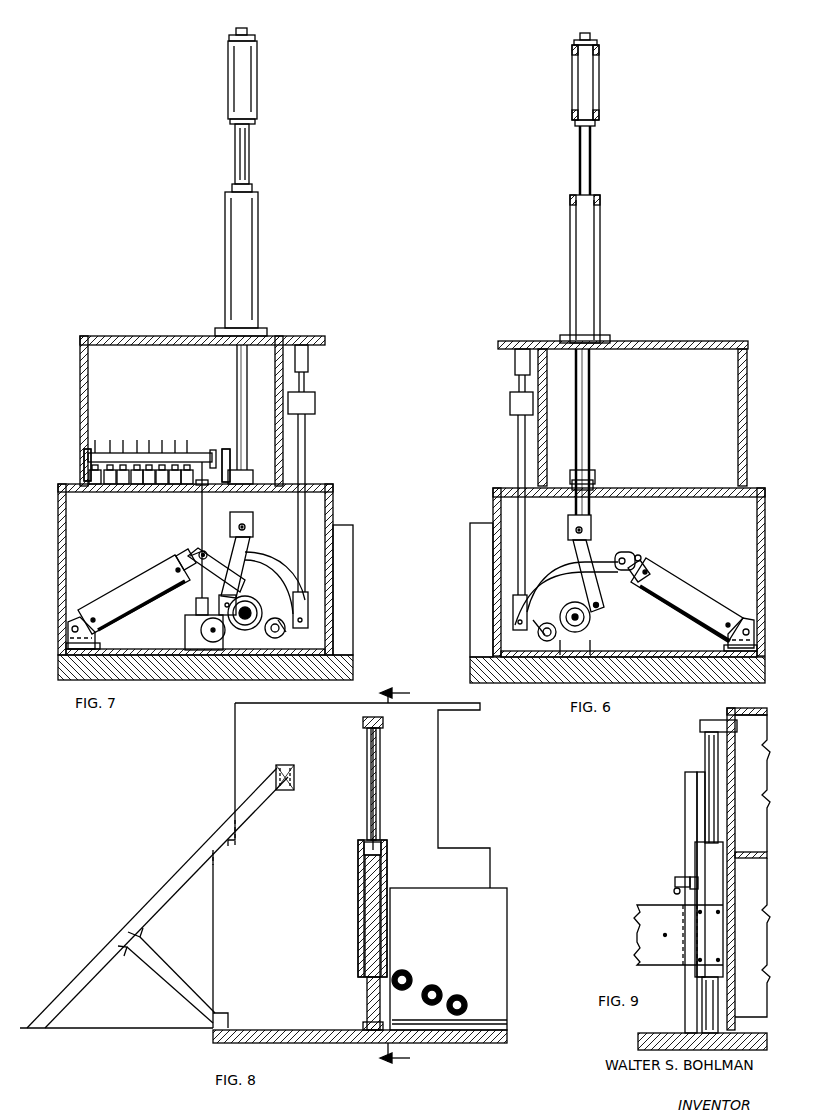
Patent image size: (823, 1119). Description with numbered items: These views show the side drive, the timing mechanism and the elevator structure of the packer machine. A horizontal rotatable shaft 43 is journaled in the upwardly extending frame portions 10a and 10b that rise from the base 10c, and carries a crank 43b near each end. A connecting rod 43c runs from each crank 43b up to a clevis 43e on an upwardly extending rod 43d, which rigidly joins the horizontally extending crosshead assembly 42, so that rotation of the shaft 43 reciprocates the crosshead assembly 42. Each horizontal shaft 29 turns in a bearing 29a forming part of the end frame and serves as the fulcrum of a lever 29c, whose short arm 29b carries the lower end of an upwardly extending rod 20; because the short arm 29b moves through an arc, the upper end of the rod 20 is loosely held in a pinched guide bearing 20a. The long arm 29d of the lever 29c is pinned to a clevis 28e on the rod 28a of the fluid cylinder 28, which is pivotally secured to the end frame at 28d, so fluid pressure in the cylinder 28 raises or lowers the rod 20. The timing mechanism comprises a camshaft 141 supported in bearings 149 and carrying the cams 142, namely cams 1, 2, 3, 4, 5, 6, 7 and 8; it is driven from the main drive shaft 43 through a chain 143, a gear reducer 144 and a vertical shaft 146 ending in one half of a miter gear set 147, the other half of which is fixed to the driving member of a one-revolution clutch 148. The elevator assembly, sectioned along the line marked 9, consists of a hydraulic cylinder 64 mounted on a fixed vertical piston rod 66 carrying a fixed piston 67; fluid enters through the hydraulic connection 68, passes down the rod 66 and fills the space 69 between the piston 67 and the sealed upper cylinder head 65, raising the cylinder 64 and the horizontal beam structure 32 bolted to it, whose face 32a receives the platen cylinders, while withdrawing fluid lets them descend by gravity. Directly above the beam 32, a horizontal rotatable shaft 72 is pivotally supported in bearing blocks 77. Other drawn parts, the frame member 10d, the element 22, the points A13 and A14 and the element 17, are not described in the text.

In FIG. 7, the crosshead assembly 42 is at (258, 75).
In FIG. 6, the crosshead assembly 42 is at (572, 75).
In FIG. 6, the frame portion 10a is at (500, 343).
In FIG. 8, the frame portion 10a is at (235, 760).
In FIG. 9, the frame portion 10a is at (757, 855).
In FIG. 7, the frame portion 10b is at (310, 336).
In FIG. 7, the base 10c is at (353, 660).
In FIG. 6, the base 10c is at (476, 676).
In FIG. 9, the base 10c is at (760, 1038).
In FIG. 8, the frame brace 10d is at (170, 886).
In FIG. 9, the frame brace 10d is at (685, 802).
In FIG. 7, the upwardly extending rod 43d is at (237, 352).
In FIG. 6, the upwardly extending rod 43d is at (591, 402).
In FIG. 6, the clevis 43e is at (590, 515).
In FIG. 7, the connecting rod 43c is at (250, 528).
In FIG. 6, the connecting rod 43c is at (592, 534).
In FIG. 7, the crank 43b is at (238, 600).
In FIG. 6, the crank 43b is at (600, 622).
In FIG. 7, the rotatable shaft 43 is at (247, 632).
In FIG. 6, the rotatable shaft 43 is at (580, 627).
In FIG. 8, the rotatable shaft 43 is at (409, 973).
In FIG. 7, the pinched guide bearing 20a is at (310, 362).
In FIG. 6, the pinched guide bearing 20a is at (515, 362).
In FIG. 7, the rod coupling 22 is at (316, 403).
In FIG. 6, the rod coupling 22 is at (510, 404).
In FIG. 7, the upwardly extending rod 20 is at (306, 450).
In FIG. 6, the upwardly extending rod 20 is at (518, 452).
In FIG. 7, the short arm 29b is at (298, 598).
In FIG. 6, the short arm 29b is at (535, 605).
In FIG. 7, the lever 29c is at (246, 575).
In FIG. 6, the lever 29c is at (575, 582).
In FIG. 7, the long arm 29d is at (216, 560).
In FIG. 6, the long arm 29d is at (608, 556).
In FIG. 7, the bearing 29a is at (284, 636).
In FIG. 6, the bearing 29a is at (540, 640).
In FIG. 7, the horizontal shaft 29 is at (277, 638).
In FIG. 6, the horizontal shaft 29 is at (546, 622).
In FIG. 8, the horizontal shaft 29 is at (440, 989).
In FIG. 7, the fluid cylinder 28 is at (138, 580).
In FIG. 6, the fluid cylinder 28 is at (690, 586).
In FIG. 7, the rod 28a is at (186, 556).
In FIG. 6, the rod 28a is at (648, 568).
In FIG. 7, the pivot 28d is at (78, 617).
In FIG. 6, the pivot 28d is at (745, 618).
In FIG. 7, the clevis 28e is at (200, 552).
In FIG. 6, the clevis 28e is at (640, 556).
In FIG. 7, the pivot point A13 is at (95, 621).
In FIG. 6, the pivot point A13 is at (727, 627).
In FIG. 7, the piston rod A14 is at (178, 572).
In FIG. 6, the piston rod A14 is at (645, 574).
In FIG. 7, the cams 142 is at (128, 422).
In FIG. 7, the camshaft 141 is at (210, 456).
In FIG. 7, the one-revolution clutch 148 is at (226, 449).
In FIG. 7, the bearings 149 is at (85, 465).
In FIG. 7, the miter gear set 147 is at (205, 470).
In FIG. 7, the vertical shaft 146 is at (201, 512).
In FIG. 7, the gear reducer 144 is at (185, 625).
In FIG. 7, the chain 143 is at (220, 642).
In FIG. 7, the cam 1 is at (95, 455).
In FIG. 7, the cam 2 is at (110, 455).
In FIG. 7, the cam 3 is at (123, 455).
In FIG. 7, the cam 4 is at (137, 455).
In FIG. 7, the cam 5 is at (149, 455).
In FIG. 7, the cam 6 is at (162, 455).
In FIG. 7, the cam 7 is at (175, 455).
In FIG. 7, the cam 8 is at (187, 455).
In FIG. 8, the section line 9- 9 is at (400, 881).
In FIG. 8, the hydraulic connection 68 is at (384, 722).
In FIG. 9, the hydraulic connection 68 is at (730, 726).
In FIG. 8, the fixed vertical piston rod 66 is at (380, 778).
In FIG. 9, the fixed vertical piston rod 66 is at (705, 746).
In FIG. 8, the upper cylinder head 65 is at (380, 840).
In FIG. 8, the space 69 is at (387, 851).
In FIG. 8, the hydraulic cylinder 64 is at (358, 880).
In FIG. 9, the hydraulic cylinder 64 is at (695, 848).
In FIG. 8, the fixed piston 67 is at (382, 866).
In FIG. 8, the shaft 17 is at (465, 1000).
In FIG. 9, the bearing blocks 77 is at (690, 880).
In FIG. 9, the horizontal rotatable shaft 72 is at (675, 881).
In FIG. 9, the horizontal beam structure 32 is at (637, 930).
In FIG. 9, the face 32a is at (665, 935).